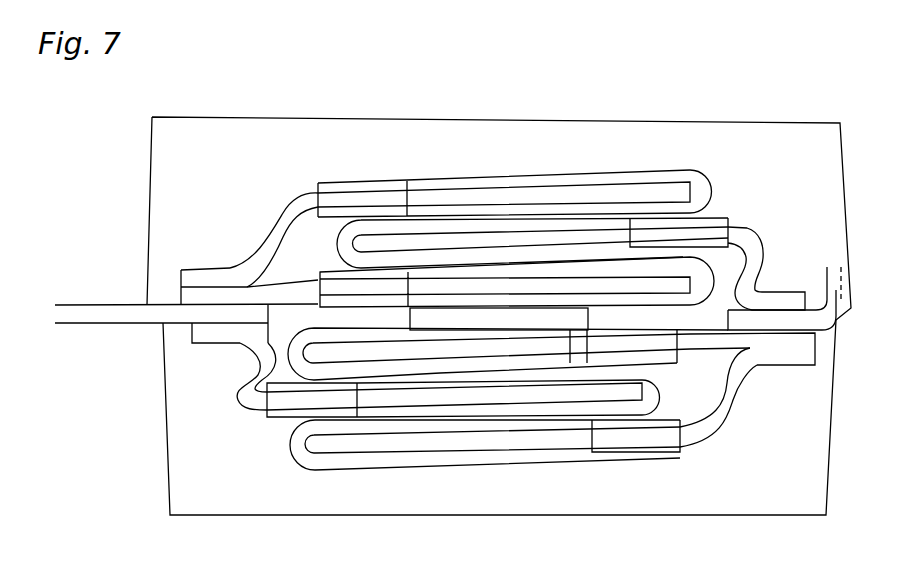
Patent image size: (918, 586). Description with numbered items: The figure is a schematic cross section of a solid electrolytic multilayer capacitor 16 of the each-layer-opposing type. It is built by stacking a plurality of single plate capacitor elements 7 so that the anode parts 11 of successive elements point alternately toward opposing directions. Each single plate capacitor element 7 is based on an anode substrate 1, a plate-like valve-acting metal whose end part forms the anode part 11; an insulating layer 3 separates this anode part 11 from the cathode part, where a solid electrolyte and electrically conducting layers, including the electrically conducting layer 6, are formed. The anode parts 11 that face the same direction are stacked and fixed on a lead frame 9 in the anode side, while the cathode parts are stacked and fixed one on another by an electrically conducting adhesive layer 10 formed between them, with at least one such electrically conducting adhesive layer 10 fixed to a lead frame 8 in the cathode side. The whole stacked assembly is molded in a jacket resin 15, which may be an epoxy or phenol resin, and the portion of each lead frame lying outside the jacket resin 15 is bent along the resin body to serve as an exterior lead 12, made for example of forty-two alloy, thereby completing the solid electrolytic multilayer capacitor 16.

The anode substrate 1 is at (188, 282).
The insulating layer 3 is at (325, 190).
The electrically conducting layer 6 is at (675, 177).
The single plate capacitor element 7 is at (707, 190).
The lead frame in the cathode side 8 is at (530, 318).
The lead frame in the anode side 9 is at (770, 320).
The electrically conducting adhesive layer 10 is at (462, 217).
The anode part 11 is at (253, 243).
The exterior lead 12 is at (88, 313).
The jacket resin 15 is at (260, 488).
The solid electrolytic multilayer capacitor 16 is at (223, 115).